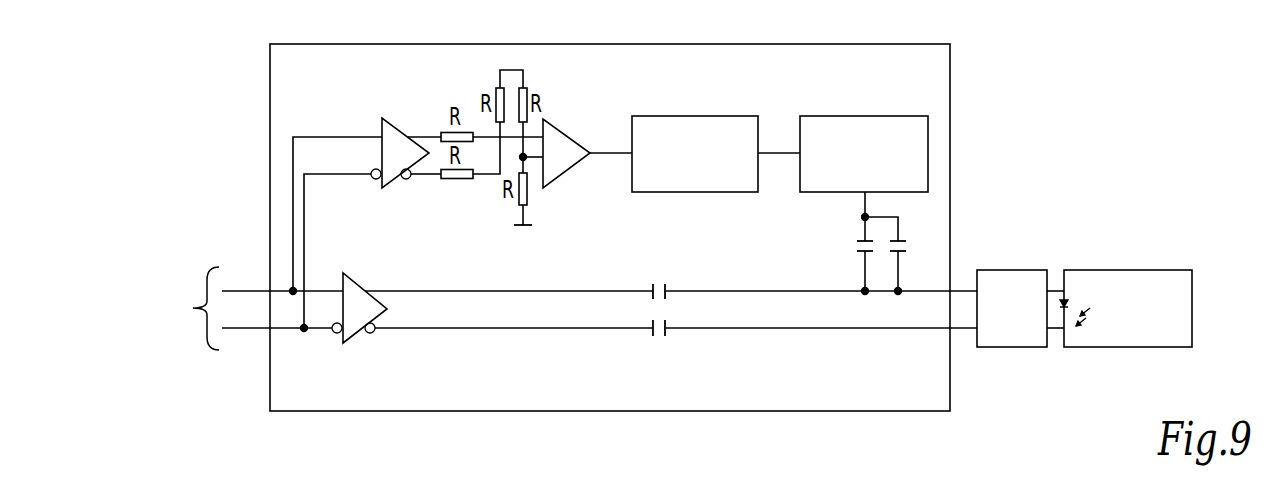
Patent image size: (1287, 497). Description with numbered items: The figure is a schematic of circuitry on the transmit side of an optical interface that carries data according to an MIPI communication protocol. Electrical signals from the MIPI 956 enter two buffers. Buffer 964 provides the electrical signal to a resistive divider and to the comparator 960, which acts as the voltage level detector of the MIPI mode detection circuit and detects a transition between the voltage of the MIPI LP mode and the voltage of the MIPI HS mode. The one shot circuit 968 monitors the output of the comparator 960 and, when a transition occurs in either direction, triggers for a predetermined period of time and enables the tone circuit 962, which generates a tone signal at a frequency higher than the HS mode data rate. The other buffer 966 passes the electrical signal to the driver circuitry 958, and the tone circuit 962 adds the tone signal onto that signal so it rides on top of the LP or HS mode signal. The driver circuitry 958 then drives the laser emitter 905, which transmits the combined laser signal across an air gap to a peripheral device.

The MIPI 956 is at (249, 308).
The buffer 966 is at (350, 274).
The buffer 964 is at (388, 121).
The comparator 960 is at (579, 134).
The one shot circuit 968 is at (692, 113).
The tone circuit 962 is at (863, 113).
The driver circuitry 958 is at (1010, 270).
The laser emitter 905 is at (1128, 270).